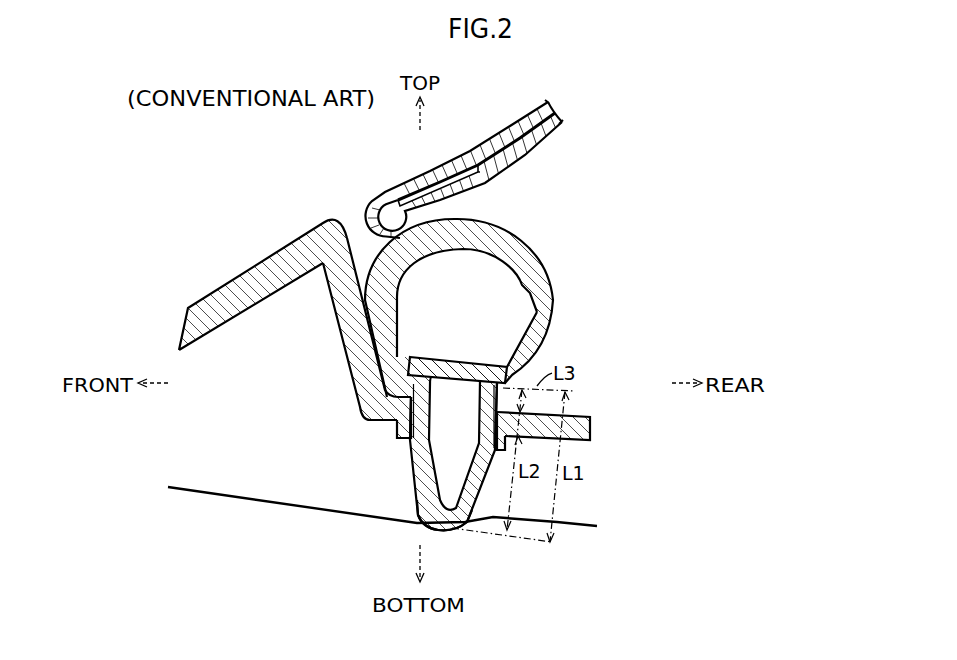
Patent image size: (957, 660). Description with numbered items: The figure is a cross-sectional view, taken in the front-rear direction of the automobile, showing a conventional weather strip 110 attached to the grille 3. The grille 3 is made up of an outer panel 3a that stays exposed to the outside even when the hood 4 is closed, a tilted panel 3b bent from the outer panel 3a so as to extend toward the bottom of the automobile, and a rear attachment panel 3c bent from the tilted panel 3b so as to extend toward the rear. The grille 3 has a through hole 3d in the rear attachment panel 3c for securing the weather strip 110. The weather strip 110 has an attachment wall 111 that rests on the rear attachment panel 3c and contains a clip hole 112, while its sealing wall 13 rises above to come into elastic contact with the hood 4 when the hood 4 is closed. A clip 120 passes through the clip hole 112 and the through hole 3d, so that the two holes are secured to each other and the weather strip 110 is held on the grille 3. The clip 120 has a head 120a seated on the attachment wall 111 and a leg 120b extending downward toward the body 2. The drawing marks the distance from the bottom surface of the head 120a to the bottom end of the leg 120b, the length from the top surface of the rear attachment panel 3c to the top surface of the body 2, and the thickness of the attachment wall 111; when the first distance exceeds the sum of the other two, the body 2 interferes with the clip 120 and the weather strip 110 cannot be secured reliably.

The body 2 is at (250, 500).
The grille 3 is at (273, 244).
The outer panel 3a is at (252, 270).
The tilted panel 3b is at (343, 321).
The rear attachment panel 3c is at (571, 418).
The through hole 3d is at (497, 430).
The hood 4 is at (410, 176).
The sealing wall 13 is at (553, 297).
The weather strip 110 is at (561, 247).
The attachment wall 111 is at (477, 358).
The clip hole 112 is at (497, 405).
The clip 120 is at (382, 458).
The head 120a is at (487, 365).
The leg 120b is at (410, 480).